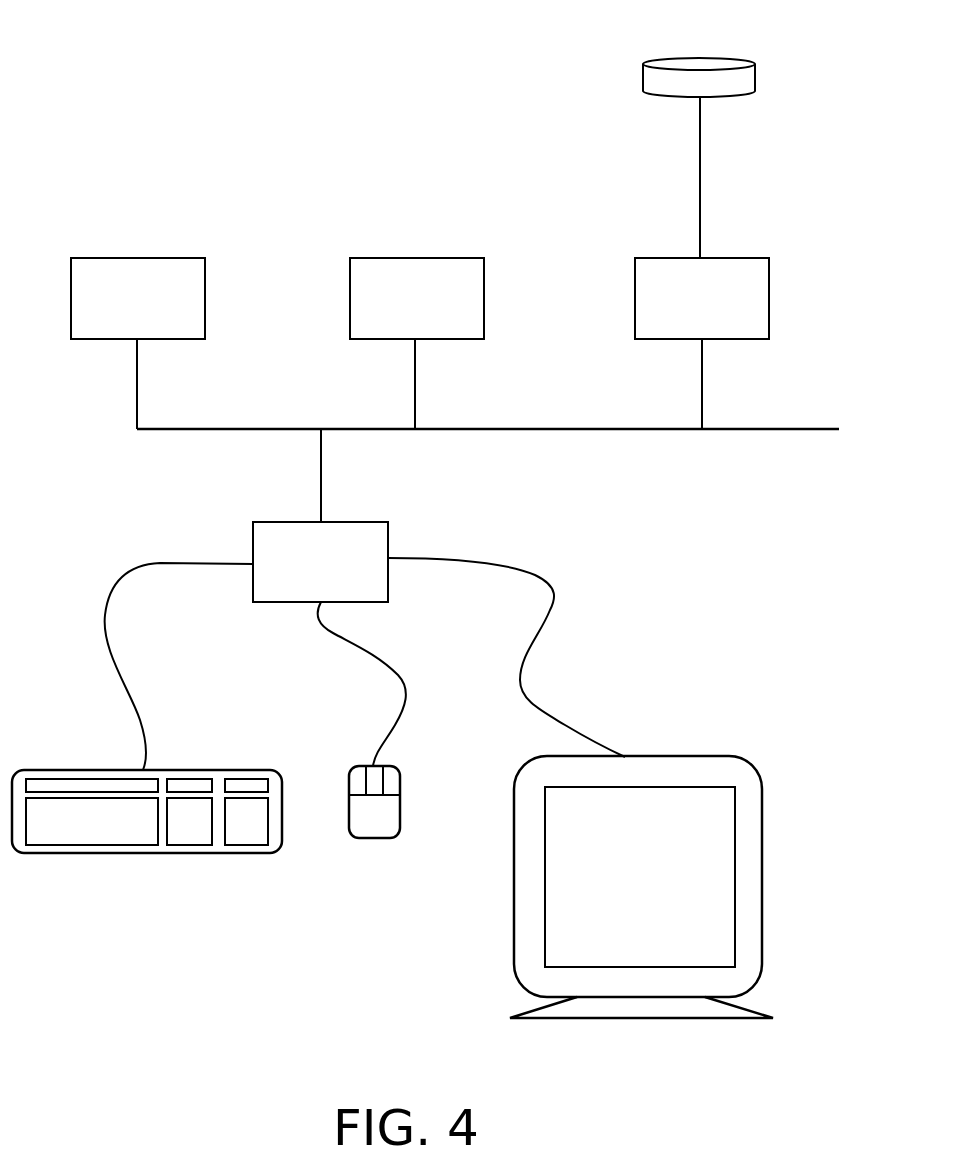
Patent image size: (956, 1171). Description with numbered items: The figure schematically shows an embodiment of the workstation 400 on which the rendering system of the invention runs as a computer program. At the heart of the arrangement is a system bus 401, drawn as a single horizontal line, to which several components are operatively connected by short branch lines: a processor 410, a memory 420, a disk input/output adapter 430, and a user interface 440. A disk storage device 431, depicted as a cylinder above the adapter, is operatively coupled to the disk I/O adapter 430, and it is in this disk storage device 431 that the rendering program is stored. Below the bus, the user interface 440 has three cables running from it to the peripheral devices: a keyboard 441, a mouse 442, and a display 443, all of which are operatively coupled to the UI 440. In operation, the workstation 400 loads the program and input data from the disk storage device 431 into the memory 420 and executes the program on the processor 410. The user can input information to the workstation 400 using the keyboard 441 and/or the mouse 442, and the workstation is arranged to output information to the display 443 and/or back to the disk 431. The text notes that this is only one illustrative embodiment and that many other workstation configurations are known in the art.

The workstation 400 is at (88, 36).
The system bus 401 is at (137, 429).
The processor 410 is at (138, 343).
The memory 420 is at (417, 343).
The disk input/output (I/O) adapter 430 is at (702, 343).
The disk storage device 431 is at (643, 80).
The user interface (UI) 440 is at (320, 515).
The keyboard 441 is at (122, 853).
The mouse 442 is at (374, 838).
The display 443 is at (765, 840).